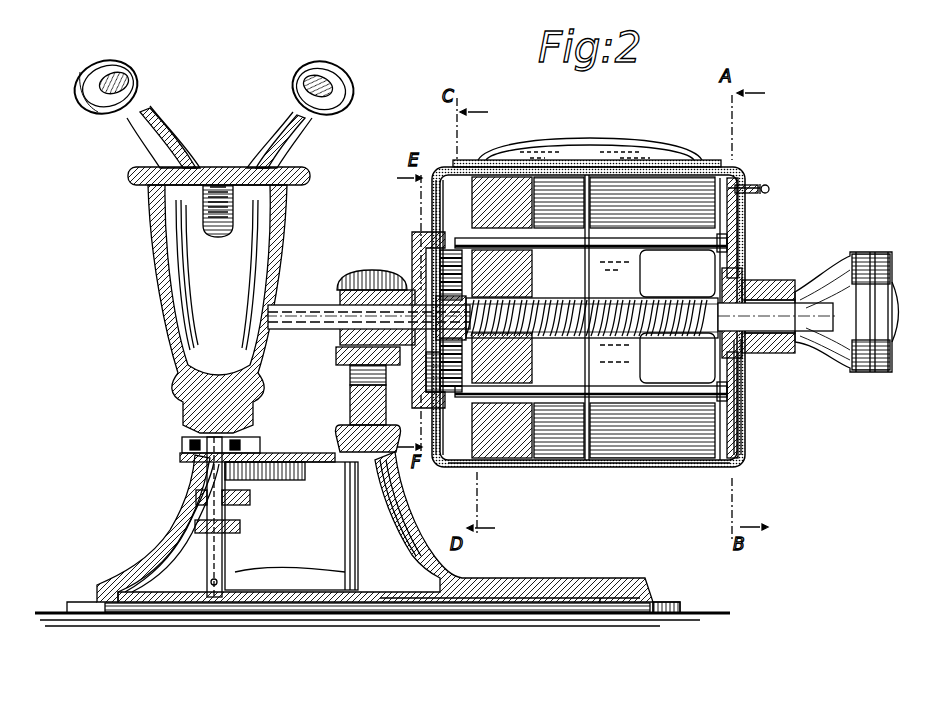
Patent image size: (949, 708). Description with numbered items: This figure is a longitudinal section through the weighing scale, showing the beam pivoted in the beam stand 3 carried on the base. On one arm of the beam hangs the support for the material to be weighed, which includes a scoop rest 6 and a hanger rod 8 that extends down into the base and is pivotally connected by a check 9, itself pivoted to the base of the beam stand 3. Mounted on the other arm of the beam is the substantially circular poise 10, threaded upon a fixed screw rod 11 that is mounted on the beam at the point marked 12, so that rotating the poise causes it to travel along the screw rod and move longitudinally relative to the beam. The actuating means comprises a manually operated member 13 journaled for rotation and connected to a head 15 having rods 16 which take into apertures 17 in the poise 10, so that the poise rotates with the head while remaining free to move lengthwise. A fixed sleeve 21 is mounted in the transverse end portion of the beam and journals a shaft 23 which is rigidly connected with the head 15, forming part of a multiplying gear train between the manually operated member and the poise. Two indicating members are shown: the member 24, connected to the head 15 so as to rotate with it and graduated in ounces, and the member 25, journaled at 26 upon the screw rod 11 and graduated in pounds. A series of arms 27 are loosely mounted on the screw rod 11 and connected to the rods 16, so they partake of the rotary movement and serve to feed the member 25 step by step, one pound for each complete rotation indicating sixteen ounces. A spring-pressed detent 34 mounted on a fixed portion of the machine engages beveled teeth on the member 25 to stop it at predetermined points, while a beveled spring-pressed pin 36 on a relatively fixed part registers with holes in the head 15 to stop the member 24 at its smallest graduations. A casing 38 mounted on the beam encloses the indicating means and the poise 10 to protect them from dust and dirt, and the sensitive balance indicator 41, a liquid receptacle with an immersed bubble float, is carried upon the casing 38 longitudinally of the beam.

The beam stand 3 is at (352, 383).
The scoop rest 6 is at (282, 112).
The hanger rod 8 is at (216, 598).
The check 9 is at (268, 588).
The poise 10 is at (612, 304).
The screw rod 11 is at (662, 345).
The screw rod mounting 12 is at (372, 298).
The manually operated member 13 is at (880, 258).
The head 15 is at (735, 370).
The rods 16 is at (652, 262).
The apertures 17 is at (530, 255).
The fixed sleeve 21 is at (762, 372).
The shaft 23 is at (775, 298).
The indicating member 24 is at (628, 470).
The indicating member 25 is at (490, 160).
The journal 26 is at (428, 372).
The arms 27 is at (455, 420).
The spring-pressed detent 34 is at (416, 252).
The beveled spring-pressed pin 36 is at (775, 185).
The casing 38 is at (742, 447).
The balance indicator 41 is at (632, 140).